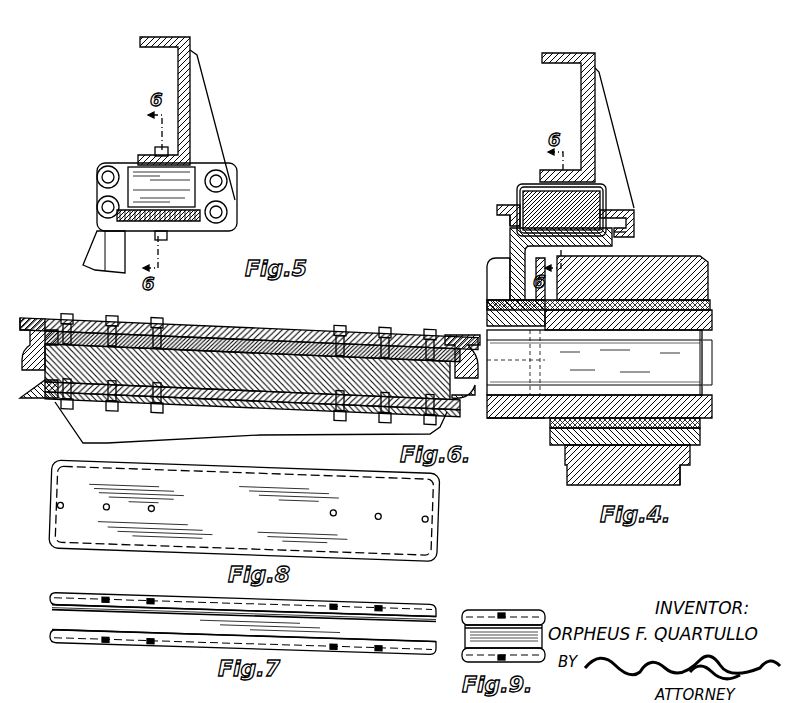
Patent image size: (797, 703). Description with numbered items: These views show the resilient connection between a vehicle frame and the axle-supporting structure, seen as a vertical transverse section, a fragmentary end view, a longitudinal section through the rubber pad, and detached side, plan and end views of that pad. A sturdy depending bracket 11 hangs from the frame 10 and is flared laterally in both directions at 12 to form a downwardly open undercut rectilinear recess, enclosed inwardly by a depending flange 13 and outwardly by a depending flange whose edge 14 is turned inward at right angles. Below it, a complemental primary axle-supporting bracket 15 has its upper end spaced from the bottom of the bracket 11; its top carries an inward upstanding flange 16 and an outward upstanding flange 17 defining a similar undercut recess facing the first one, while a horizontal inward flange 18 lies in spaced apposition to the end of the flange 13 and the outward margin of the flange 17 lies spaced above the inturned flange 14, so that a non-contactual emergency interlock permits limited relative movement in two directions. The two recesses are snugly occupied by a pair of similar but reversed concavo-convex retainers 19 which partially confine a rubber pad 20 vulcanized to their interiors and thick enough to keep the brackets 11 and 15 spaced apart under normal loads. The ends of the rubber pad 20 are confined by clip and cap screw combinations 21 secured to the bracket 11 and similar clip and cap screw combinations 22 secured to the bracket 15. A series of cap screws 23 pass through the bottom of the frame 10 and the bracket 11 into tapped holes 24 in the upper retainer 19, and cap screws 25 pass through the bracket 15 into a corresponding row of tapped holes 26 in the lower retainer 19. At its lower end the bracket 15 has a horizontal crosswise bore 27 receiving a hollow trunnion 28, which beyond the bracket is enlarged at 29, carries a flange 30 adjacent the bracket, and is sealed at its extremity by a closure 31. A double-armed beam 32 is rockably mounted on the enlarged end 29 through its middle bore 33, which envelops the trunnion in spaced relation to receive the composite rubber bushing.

In FIG. 5, the frame 10 is at (190, 40).
In FIG. 4, the frame 10 is at (593, 57).
In FIG. 6, the frame 10 is at (315, 303).
In FIG. 5, the depending bracket 11 is at (210, 112).
In FIG. 4, the depending bracket 11 is at (608, 128).
In FIG. 6, the depending bracket 11 is at (358, 330).
In FIG. 4, the lateral flare 12 is at (603, 190).
In FIG. 6, the lateral flare 12 is at (268, 306).
In FIG. 5, the inward depending flange 13 is at (100, 195).
In FIG. 4, the inward depending flange 13 is at (497, 210).
In FIG. 5, the inwardly flanged edge 14 is at (230, 210).
In FIG. 4, the inwardly flanged edge 14 is at (634, 232).
In FIG. 5, the primary axle-supporting bracket 15 is at (97, 245).
In FIG. 4, the primary axle-supporting bracket 15 is at (490, 262).
In FIG. 6, the primary axle-supporting bracket 15 is at (70, 434).
In FIG. 4, the inward upstanding flange 16 is at (510, 220).
In FIG. 4, the outward upstanding flange 17 is at (634, 213).
In FIG. 4, the horizontal inward flange 18 is at (510, 232).
In FIG. 4, the concavo-convex retainer 19 is at (527, 186).
In FIG. 6, the concavo-convex retainer 19 is at (210, 327).
In FIG. 8, the concavo-convex retainer 19 is at (440, 505).
In FIG. 7, the concavo-convex retainer 19 is at (418, 602).
In FIG. 9, the concavo-convex retainer 19 is at (538, 614).
In FIG. 4, the rubber pad 20 is at (520, 192).
In FIG. 6, the rubber pad 20 is at (275, 402).
In FIG. 7, the rubber pad 20 is at (128, 614).
In FIG. 9, the rubber pad 20 is at (512, 630).
In FIG. 5, the clip and cap screw combination 21 is at (182, 178).
In FIG. 4, the clip and cap screw combination 21 is at (487, 345).
In FIG. 6, the clip and cap screw combination 21 is at (35, 320).
In FIG. 5, the clip and cap screw combination 22 is at (200, 226).
In FIG. 4, the clip and cap screw combination 22 is at (487, 415).
In FIG. 6, the clip and cap screw combination 22 is at (40, 398).
In FIG. 5, the cap screw 23 is at (155, 150).
In FIG. 6, the cap screw 23 is at (342, 317).
In FIG. 6, the tapped hole 24 is at (396, 328).
In FIG. 8, the tapped hole 24 is at (378, 518).
In FIG. 7, the tapped hole 24 is at (382, 604).
In FIG. 9, the tapped hole 24 is at (500, 613).
In FIG. 5, the cap screw 25 is at (168, 234).
In FIG. 6, the cap screw 25 is at (340, 412).
In FIG. 6, the tapped hole 26 is at (380, 414).
In FIG. 7, the tapped hole 26 is at (382, 652).
In FIG. 9, the tapped hole 26 is at (498, 660).
In FIG. 4, the crosswise bore 27 is at (492, 300).
In FIG. 4, the hollow trunnion 28 is at (522, 416).
In FIG. 4, the trunnion enlargement 29 is at (712, 412).
In FIG. 4, the trunnion flange 30 is at (552, 440).
In FIG. 4, the closure 31 is at (714, 378).
In FIG. 4, the double-armed beam 32 is at (690, 470).
In FIG. 4, the middle bore 33 is at (588, 476).